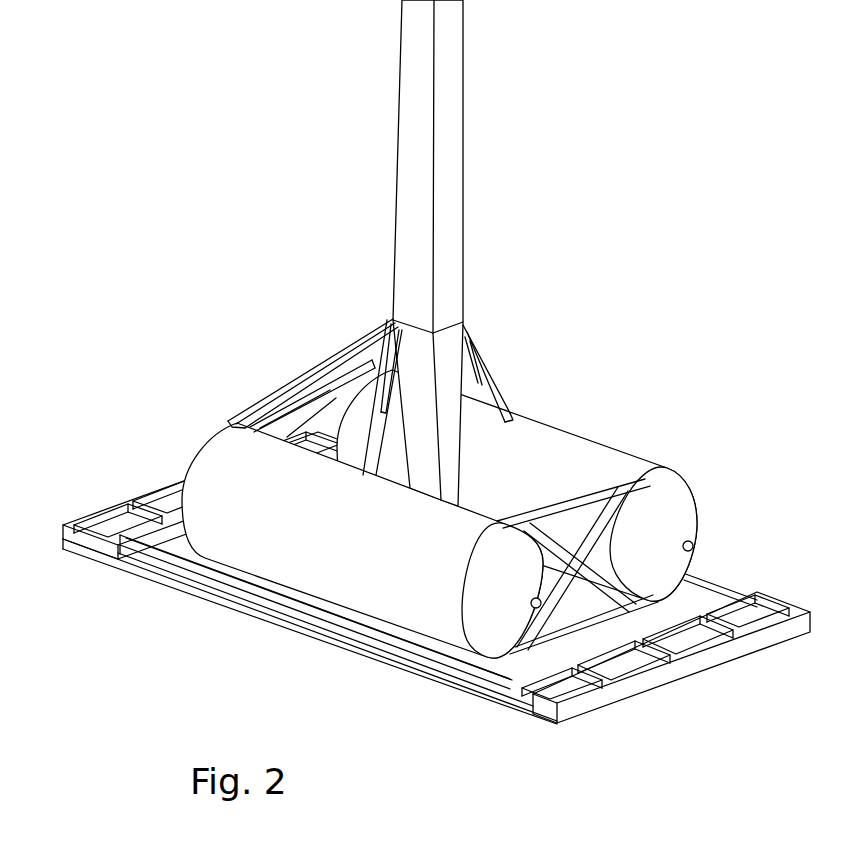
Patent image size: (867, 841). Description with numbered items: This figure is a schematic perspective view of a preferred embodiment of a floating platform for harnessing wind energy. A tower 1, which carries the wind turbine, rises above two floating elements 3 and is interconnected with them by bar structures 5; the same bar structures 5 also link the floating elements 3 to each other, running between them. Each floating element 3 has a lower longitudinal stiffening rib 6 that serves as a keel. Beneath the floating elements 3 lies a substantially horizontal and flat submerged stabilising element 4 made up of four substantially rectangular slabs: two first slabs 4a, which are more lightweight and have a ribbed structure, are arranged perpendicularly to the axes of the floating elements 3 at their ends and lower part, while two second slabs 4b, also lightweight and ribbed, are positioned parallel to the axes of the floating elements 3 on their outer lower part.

The tower 1 is at (447, 118).
The floating elements 3 is at (218, 455).
The stabilising element 4 is at (520, 715).
The first slabs 4a is at (105, 520).
The second slabs 4b is at (400, 648).
The bar structures 5 is at (330, 357).
The lower longitudinal stiffening rib 6 is at (245, 603).